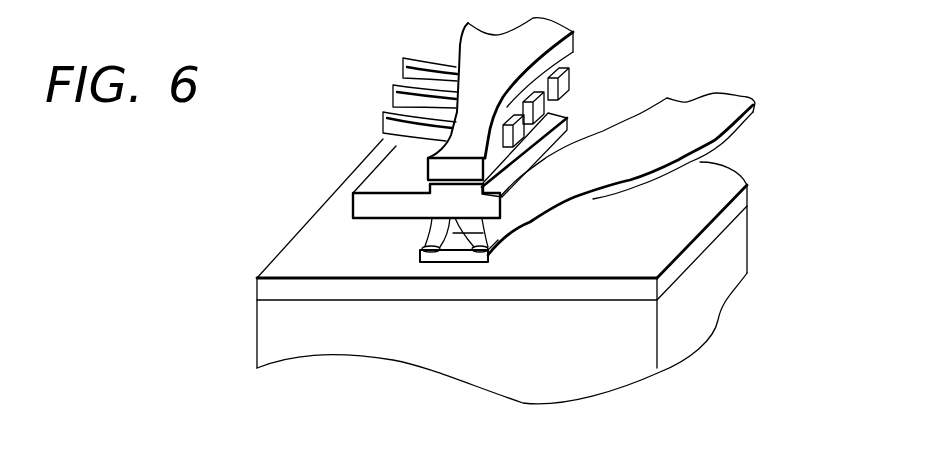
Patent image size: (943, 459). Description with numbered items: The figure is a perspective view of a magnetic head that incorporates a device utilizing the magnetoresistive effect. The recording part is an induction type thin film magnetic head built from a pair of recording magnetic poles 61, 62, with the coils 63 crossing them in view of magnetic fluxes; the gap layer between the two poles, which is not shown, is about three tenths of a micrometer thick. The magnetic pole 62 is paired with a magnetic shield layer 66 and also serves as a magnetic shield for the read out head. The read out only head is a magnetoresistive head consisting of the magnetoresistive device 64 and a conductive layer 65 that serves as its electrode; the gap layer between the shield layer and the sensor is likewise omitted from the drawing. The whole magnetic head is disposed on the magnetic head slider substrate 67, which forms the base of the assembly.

The recording magnetic pole 61 is at (427, 170).
The magnetic pole 62 is at (352, 206).
The coil 63 is at (403, 73).
The magnetoresistive device 64 is at (453, 255).
The conductive layer 65 is at (427, 234).
The magnetic shield layer 66 is at (258, 290).
The slider substrate 67 is at (580, 393).